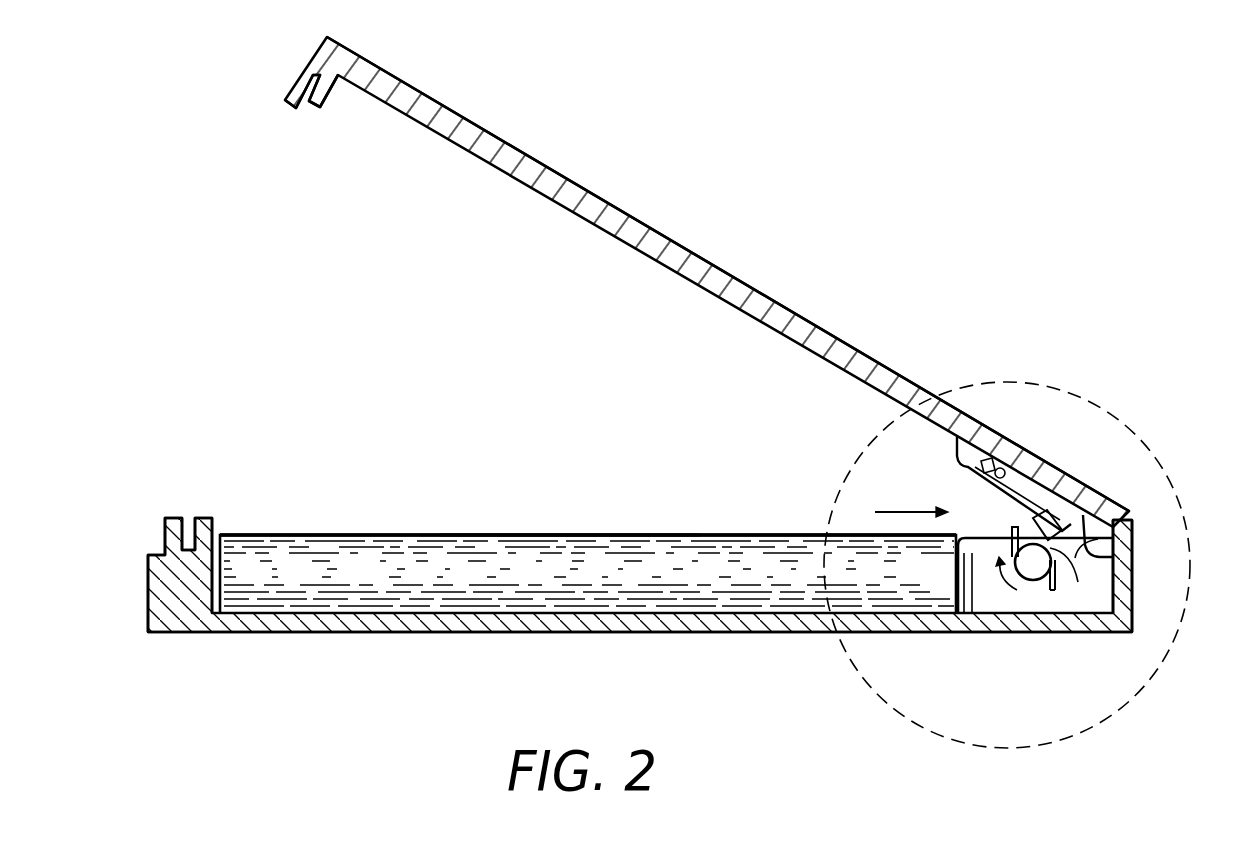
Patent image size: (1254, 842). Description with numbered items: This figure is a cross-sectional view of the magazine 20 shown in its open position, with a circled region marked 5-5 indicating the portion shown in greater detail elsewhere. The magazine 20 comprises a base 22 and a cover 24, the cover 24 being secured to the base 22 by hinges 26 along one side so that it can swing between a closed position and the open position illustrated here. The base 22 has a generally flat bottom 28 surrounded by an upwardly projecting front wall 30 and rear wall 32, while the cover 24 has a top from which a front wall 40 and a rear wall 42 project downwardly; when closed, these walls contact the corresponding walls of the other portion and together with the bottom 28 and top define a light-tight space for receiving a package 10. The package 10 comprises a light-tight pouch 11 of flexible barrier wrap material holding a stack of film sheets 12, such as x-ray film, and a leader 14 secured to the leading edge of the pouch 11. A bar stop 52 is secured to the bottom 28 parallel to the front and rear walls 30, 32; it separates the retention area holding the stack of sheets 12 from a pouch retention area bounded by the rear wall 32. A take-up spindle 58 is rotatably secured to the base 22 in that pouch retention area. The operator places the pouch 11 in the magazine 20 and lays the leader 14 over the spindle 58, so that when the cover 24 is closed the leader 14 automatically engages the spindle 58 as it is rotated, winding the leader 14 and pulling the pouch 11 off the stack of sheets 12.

The magazine 20 is at (614, 172).
The cover 24 is at (453, 105).
The front wall 40 is at (293, 92).
The base 22 is at (320, 633).
The bottom 28 is at (705, 633).
The front wall 30 is at (148, 600).
The hinges 26 is at (1133, 549).
The rear wall 32 is at (1133, 600).
The film sheets 12 is at (288, 556).
The package 10 is at (405, 534).
The light-tight pouch 11 is at (462, 534).
The bar stop 52 is at (958, 600).
The take-up spindle 58 is at (1054, 552).
The leader 14 is at (1006, 533).
The rear wall 42 is at (1130, 512).
The section line 5-5 is at (1125, 418).